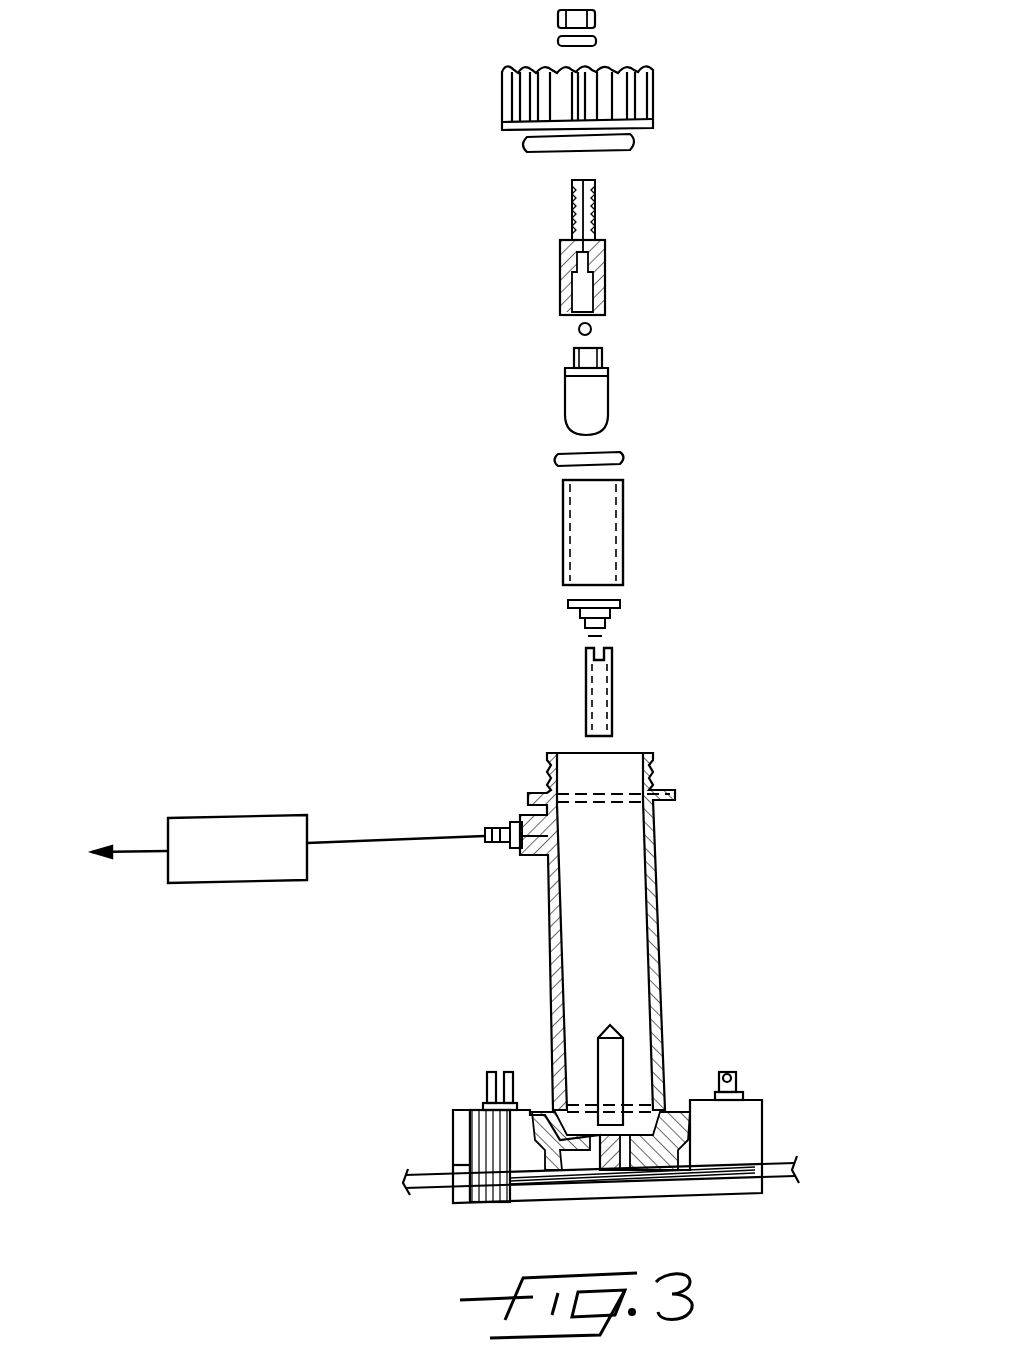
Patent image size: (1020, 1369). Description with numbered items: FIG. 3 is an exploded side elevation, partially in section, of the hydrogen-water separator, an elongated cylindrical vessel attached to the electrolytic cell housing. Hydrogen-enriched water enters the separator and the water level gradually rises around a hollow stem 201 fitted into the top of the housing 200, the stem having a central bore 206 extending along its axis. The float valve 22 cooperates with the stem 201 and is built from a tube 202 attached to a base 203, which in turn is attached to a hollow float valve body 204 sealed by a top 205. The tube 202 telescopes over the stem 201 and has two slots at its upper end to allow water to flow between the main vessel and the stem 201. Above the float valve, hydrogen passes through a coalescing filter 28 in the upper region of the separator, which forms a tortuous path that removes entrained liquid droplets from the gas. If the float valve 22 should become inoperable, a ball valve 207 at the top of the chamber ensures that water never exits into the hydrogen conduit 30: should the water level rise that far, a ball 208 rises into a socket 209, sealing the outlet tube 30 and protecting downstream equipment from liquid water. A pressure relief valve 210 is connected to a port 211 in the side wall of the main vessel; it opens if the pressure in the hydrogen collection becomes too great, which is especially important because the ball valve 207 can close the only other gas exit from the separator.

The conduit 30 is at (590, 176).
The socket 209 is at (586, 288).
The ball 208 is at (592, 331).
The coalescing filter 28 is at (609, 398).
The top 205 is at (615, 452).
The float valve body 204 is at (624, 522).
The base 203 is at (621, 610).
The tube 202 is at (613, 697).
The ball valve 207 is at (500, 186).
The float valve 22 is at (505, 447).
The port 211 is at (540, 860).
The pressure relief valve 210 is at (242, 883).
The hollow stem 201 is at (623, 1045).
The base block 200 is at (575, 1175).
The central bore 206 is at (615, 1172).